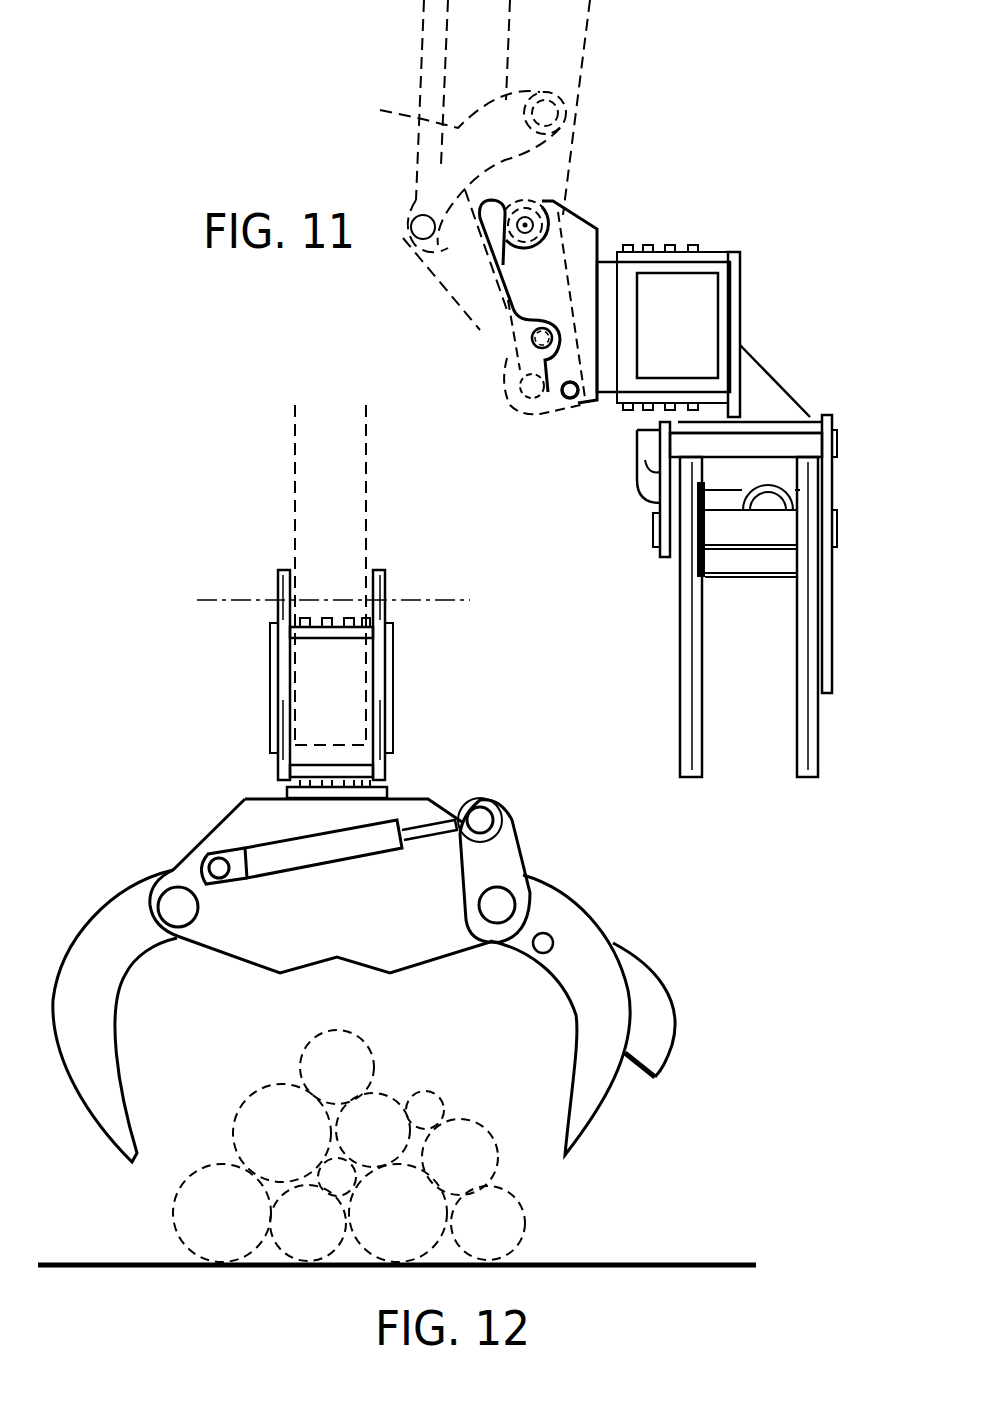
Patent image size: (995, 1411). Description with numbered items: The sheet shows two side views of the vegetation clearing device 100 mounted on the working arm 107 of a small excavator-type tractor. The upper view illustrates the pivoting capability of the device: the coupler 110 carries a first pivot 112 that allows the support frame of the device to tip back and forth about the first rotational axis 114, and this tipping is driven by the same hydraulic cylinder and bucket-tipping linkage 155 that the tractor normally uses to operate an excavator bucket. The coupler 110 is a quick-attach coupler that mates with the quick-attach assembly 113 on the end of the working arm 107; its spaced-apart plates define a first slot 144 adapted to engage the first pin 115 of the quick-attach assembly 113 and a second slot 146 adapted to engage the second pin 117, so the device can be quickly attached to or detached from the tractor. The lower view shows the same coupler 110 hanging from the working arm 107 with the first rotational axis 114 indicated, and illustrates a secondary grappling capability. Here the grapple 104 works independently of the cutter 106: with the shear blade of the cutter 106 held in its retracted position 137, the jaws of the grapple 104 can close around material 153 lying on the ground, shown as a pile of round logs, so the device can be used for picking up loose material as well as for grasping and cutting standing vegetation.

In FIG. 11, the vegetation clearing device 100 is at (760, 343).
In FIG. 12, the vegetation clearing device 100 is at (170, 787).
In FIG. 12, the grapple 104 is at (615, 1148).
In FIG. 12, the cutter 106 is at (688, 995).
In FIG. 11, the working arm 107 is at (590, 12).
In FIG. 12, the working arm 107 is at (367, 483).
In FIG. 11, the coupler 110 is at (582, 222).
In FIG. 12, the coupler 110 is at (382, 573).
In FIG. 11, the first pivot 112 is at (505, 250).
In FIG. 11, the quick-attach assembly 113 is at (512, 405).
In FIG. 12, the first rotational axis 114 is at (242, 600).
In FIG. 11, the first pin 115 is at (567, 182).
In FIG. 11, the second pin 117 is at (515, 356).
In FIG. 12, the retracted position 137 is at (700, 1060).
In FIG. 11, the first slot 144 is at (533, 189).
In FIG. 11, the second slot 146 is at (528, 338).
In FIG. 12, the material 153 is at (265, 1090).
In FIG. 11, the bucket-tipping linkage 155 is at (460, 128).